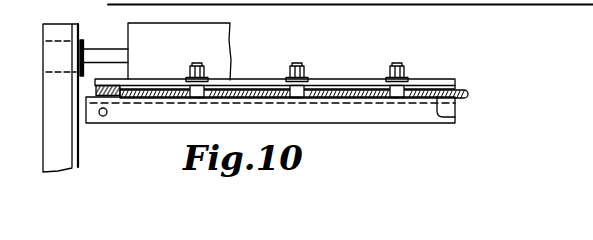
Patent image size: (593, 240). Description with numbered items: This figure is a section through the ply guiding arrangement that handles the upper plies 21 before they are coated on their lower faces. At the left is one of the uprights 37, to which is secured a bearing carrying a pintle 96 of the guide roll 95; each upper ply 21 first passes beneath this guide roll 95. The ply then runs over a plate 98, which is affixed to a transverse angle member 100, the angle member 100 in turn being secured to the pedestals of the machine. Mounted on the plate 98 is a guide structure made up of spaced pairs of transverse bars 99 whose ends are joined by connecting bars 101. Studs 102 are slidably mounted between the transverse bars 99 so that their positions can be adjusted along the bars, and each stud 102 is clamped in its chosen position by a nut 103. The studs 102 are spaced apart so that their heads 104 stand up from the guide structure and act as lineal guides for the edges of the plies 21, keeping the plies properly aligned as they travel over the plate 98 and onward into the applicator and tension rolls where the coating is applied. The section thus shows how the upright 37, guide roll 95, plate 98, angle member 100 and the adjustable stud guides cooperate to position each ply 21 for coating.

The upright 37 is at (52, 106).
The pintle 96 is at (107, 48).
The guide roll 95 is at (221, 39).
The transverse bar 99 is at (366, 79).
The connecting bar 101 is at (117, 97).
The upper ply 21 is at (466, 91).
The stud 102 is at (402, 66).
The nut 103 is at (404, 72).
The stud head 104 is at (393, 100).
The transverse angle member 100 is at (323, 118).
The plate 98 is at (456, 118).